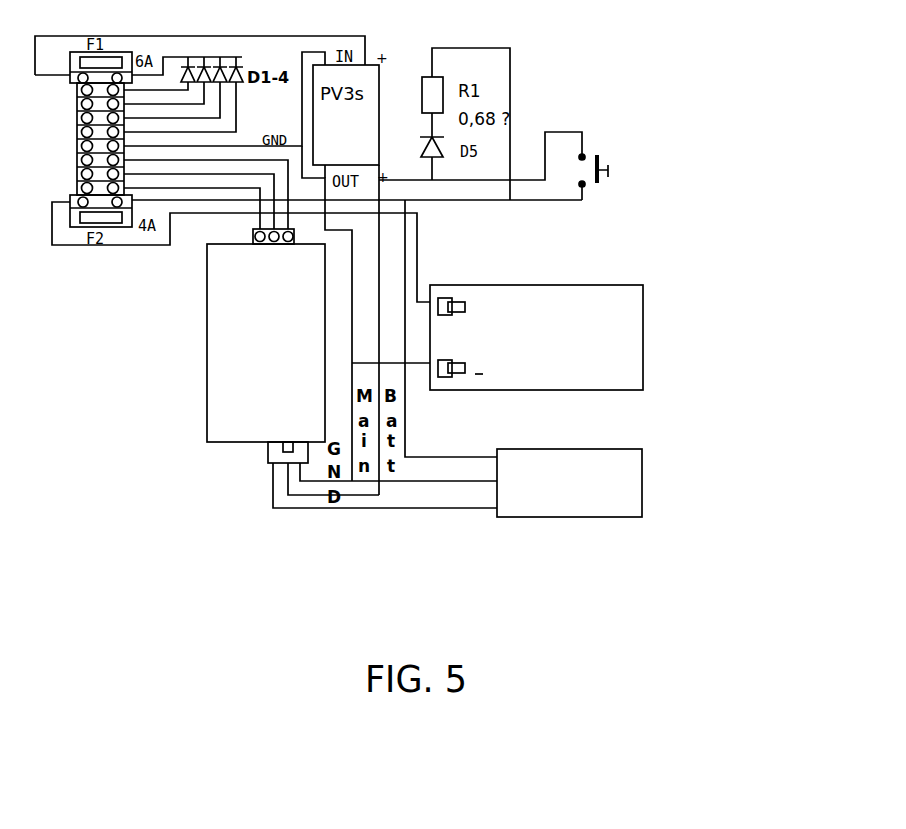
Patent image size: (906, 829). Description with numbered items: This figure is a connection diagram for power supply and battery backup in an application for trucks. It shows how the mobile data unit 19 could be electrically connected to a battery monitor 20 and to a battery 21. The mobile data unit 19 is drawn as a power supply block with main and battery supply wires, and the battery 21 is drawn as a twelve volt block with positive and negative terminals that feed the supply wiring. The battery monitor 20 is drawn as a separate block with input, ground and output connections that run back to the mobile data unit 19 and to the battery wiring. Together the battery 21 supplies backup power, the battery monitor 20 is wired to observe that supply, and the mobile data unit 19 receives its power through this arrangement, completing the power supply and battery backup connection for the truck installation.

The mobile data unit 19 is at (190, 309).
The battery monitor 20 is at (648, 470).
The battery 21 is at (650, 348).